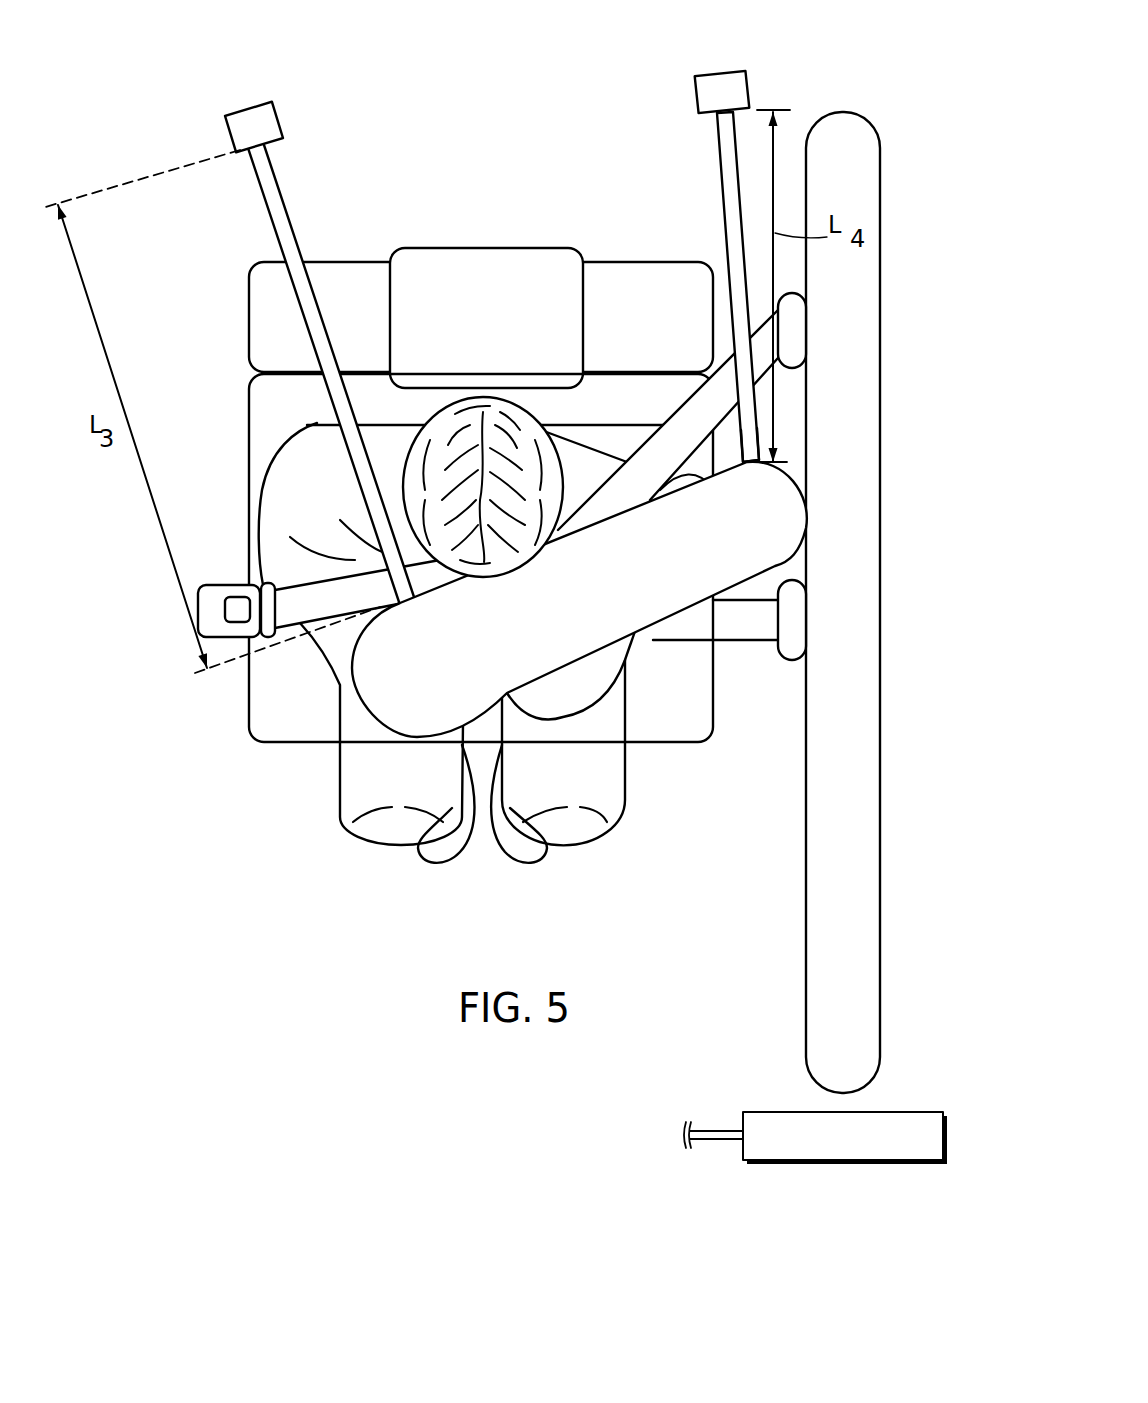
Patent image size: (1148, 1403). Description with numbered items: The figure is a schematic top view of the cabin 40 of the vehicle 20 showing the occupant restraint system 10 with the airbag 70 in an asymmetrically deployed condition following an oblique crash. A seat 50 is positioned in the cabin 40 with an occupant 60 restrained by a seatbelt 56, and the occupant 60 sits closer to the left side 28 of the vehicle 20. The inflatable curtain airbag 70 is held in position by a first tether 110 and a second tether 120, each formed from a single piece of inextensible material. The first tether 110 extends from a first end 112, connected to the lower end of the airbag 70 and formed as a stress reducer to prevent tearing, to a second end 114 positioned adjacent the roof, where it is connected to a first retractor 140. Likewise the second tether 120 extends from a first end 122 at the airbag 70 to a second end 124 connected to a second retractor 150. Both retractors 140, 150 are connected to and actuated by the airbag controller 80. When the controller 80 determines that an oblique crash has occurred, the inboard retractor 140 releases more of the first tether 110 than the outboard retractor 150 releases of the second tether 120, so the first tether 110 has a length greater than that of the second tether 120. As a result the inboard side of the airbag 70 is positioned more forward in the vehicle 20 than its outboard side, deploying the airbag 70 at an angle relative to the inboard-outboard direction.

The occupant restraint system 10 is at (488, 364).
The vehicle 20 is at (885, 602).
The left side 28 is at (888, 668).
The cabin 40 is at (97, 582).
The seat 50 is at (348, 275).
The seatbelt 56 is at (688, 420).
The occupant 60 is at (353, 790).
The inflatable curtain airbag 70 is at (590, 670).
The airbag controller 80 is at (845, 1163).
The first tether 110 is at (305, 381).
The first end 112 is at (362, 662).
The second end 114 is at (277, 198).
The second tether 120 is at (764, 243).
The first end 122 is at (752, 422).
The second end 124 is at (725, 167).
The first retractor 140 is at (260, 123).
The second retractor 150 is at (720, 92).